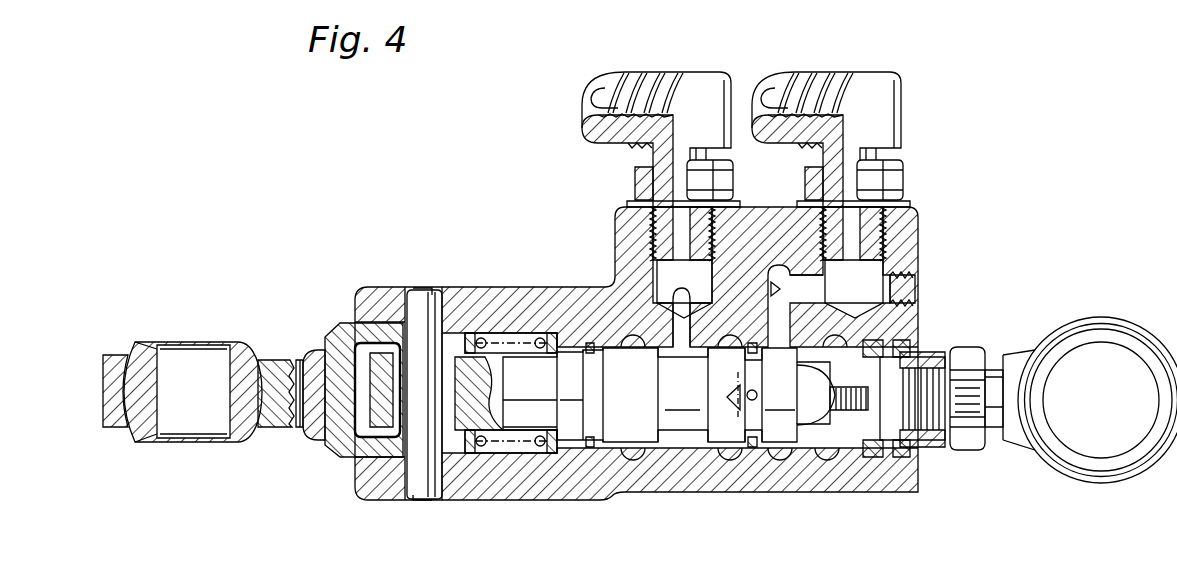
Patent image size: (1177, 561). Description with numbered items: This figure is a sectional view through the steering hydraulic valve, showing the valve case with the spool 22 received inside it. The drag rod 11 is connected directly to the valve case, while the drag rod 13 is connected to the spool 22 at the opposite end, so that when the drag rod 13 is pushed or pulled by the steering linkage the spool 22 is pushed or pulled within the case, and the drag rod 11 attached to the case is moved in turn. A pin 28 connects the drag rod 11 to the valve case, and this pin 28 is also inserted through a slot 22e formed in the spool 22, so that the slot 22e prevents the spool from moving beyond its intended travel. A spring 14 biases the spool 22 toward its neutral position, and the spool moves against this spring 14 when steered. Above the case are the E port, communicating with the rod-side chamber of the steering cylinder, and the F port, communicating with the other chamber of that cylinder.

The drag rod 11 is at (274, 365).
The drag rod 13 is at (996, 382).
The spring 14 is at (543, 342).
The spool 22 is at (645, 405).
The slot 22e is at (452, 401).
The pin 28 is at (424, 316).
The E port E is at (702, 134).
The F port F is at (878, 133).